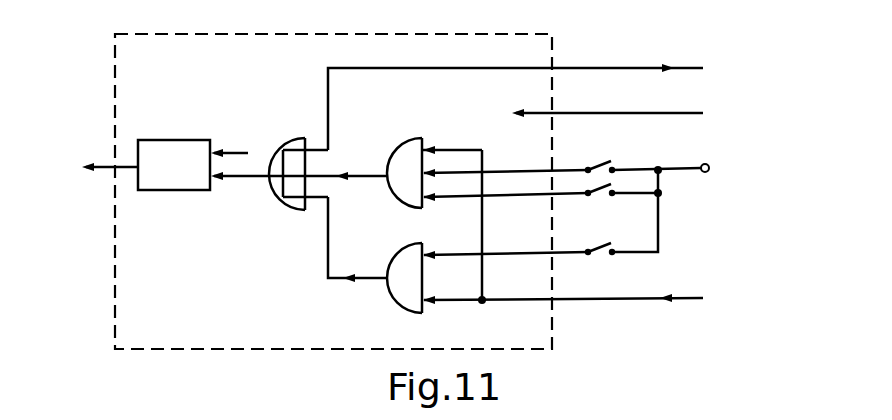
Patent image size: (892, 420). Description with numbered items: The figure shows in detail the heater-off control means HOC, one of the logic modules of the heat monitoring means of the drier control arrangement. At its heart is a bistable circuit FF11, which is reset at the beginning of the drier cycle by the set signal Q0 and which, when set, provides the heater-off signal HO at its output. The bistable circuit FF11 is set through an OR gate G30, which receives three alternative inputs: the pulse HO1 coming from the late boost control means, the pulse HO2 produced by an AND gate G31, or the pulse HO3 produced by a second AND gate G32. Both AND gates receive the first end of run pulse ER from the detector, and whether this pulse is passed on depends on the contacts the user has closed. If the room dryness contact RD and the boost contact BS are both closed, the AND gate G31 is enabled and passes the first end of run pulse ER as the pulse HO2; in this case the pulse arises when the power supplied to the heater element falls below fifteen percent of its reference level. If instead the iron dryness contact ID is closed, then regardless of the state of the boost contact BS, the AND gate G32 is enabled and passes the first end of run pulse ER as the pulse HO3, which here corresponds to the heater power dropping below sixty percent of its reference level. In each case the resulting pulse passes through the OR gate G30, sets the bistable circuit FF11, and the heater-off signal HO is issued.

The heater-off control means HOC is at (113, 110).
The heater-off signal HO is at (87, 168).
The bistable circuit FF11 is at (174, 165).
The set signal Q0 is at (234, 120).
The OR gate G30 is at (299, 190).
The AND gate G31 is at (430, 204).
The AND gate G32 is at (409, 293).
The pulse from late boost control means HO1 is at (543, 101).
The pulse from AND gate G31 HO2 is at (356, 194).
The pulse from AND gate G32 HO3 is at (357, 254).
The room dryness contact RD is at (562, 154).
The boost contact BS is at (541, 205).
The iron dryness contact ID is at (541, 227).
The first end of run pulse ER is at (584, 297).